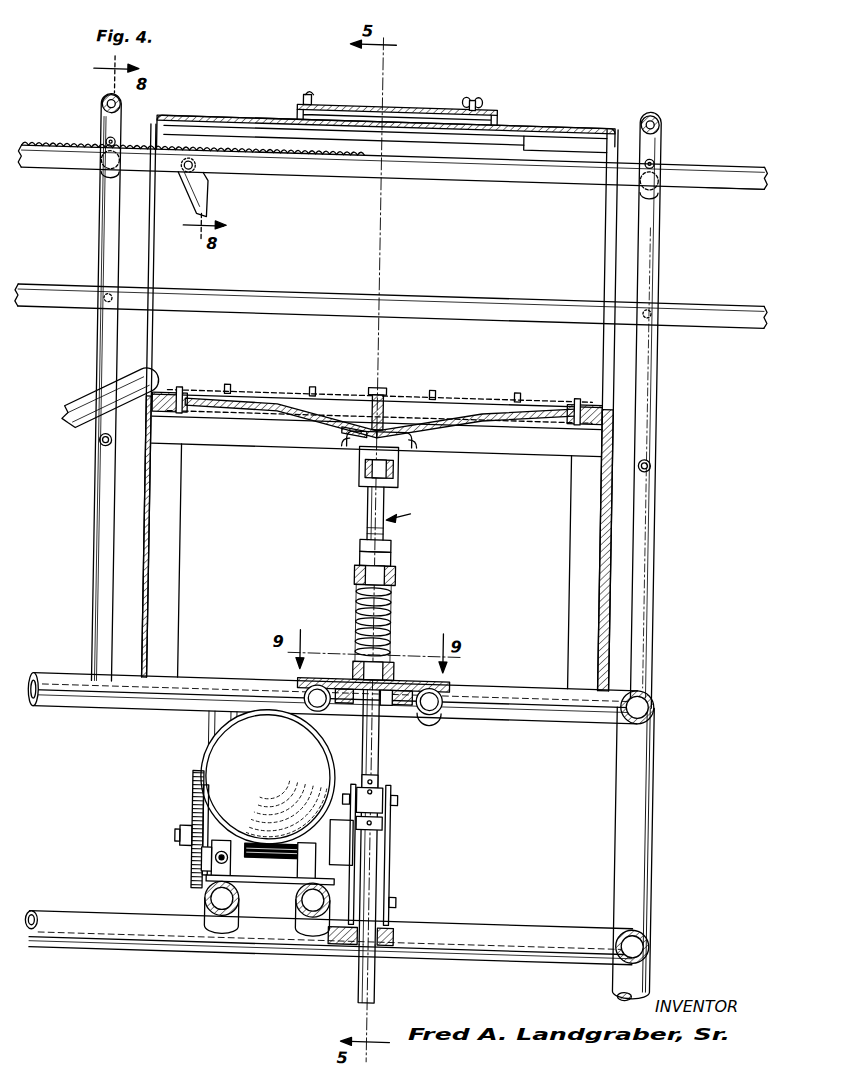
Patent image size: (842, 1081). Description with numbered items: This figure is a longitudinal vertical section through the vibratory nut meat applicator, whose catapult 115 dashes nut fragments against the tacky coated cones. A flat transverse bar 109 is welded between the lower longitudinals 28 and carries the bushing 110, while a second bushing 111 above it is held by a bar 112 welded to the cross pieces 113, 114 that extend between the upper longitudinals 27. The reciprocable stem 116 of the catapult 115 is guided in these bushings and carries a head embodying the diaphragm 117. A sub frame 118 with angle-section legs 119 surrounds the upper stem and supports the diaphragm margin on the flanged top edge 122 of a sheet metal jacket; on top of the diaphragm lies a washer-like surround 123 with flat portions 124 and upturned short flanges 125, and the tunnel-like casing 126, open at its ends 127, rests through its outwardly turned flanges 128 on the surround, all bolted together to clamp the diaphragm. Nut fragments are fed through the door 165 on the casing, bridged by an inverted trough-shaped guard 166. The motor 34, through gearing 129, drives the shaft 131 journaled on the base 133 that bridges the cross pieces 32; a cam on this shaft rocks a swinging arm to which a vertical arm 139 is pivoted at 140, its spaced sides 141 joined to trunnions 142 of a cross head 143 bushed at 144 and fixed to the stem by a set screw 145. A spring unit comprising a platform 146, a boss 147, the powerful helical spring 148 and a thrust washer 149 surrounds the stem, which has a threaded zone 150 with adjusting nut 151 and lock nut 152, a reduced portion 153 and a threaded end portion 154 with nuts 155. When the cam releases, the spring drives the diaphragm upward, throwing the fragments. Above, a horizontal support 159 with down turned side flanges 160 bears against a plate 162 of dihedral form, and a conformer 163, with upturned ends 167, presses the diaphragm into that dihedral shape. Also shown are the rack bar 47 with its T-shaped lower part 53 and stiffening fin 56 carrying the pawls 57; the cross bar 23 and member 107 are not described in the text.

The cross bar 23 is at (262, 295).
The upper longitudinals 27 is at (549, 717).
The lower longitudinals 28 is at (500, 957).
The cross pieces 32 is at (300, 905).
The motor 34 is at (288, 773).
The rack bar 47 is at (80, 150).
The lower part of rack bar 53 is at (393, 159).
The stiffening fin 56 is at (706, 179).
The pawls 57 is at (202, 200).
The handle 107 is at (80, 401).
The flat transverse bar 109 is at (400, 931).
The bushing 110 is at (366, 951).
The bushing 111 is at (393, 706).
The bar 112 is at (432, 714).
The cross piece 113 is at (305, 686).
The cross piece 114 is at (445, 691).
The vertical catapult 115 is at (416, 512).
The reciprocable stem 116 is at (383, 753).
The diaphragm 117 is at (440, 397).
The sub frame 118 is at (654, 535).
The legs 119 is at (180, 500).
The top edge of jacket 122 is at (210, 424).
The washer-like surround 123 is at (210, 398).
The flat portions 124 is at (325, 404).
The short flanges 125 is at (163, 398).
The tunnel-like casing 126 is at (585, 121).
The open ends 127 is at (604, 240).
The outwardly turned flanges 128 is at (280, 395).
The gearing 129 is at (200, 820).
The shaft 131 is at (182, 842).
The base 133 is at (296, 882).
The vertical arm 139 is at (395, 853).
The pivot 140 is at (402, 901).
The spaced sides 141 is at (388, 826).
The trunnions 142 is at (402, 799).
The cross head 143 is at (388, 806).
The bushing of cross head 144 is at (350, 794).
The set screw 145 is at (383, 779).
The platform 146 is at (405, 681).
The boss 147 is at (355, 676).
The helical spring 148 is at (393, 616).
The thrust washer 149 is at (397, 577).
The threaded zone 150 is at (384, 531).
The adjusting nut 151 is at (391, 560).
The lock nut 152 is at (391, 546).
The reduced portion 153 is at (384, 502).
The threaded end portion 154 is at (397, 462).
The nuts 155 is at (364, 472).
The horizontal support 159 is at (407, 440).
The down turned side flanges 160 is at (350, 448).
The plate 162 is at (345, 439).
The conformer 163 is at (383, 405).
The door 165 is at (430, 108).
The guard 166 is at (520, 146).
The upturned ends 167 is at (380, 390).